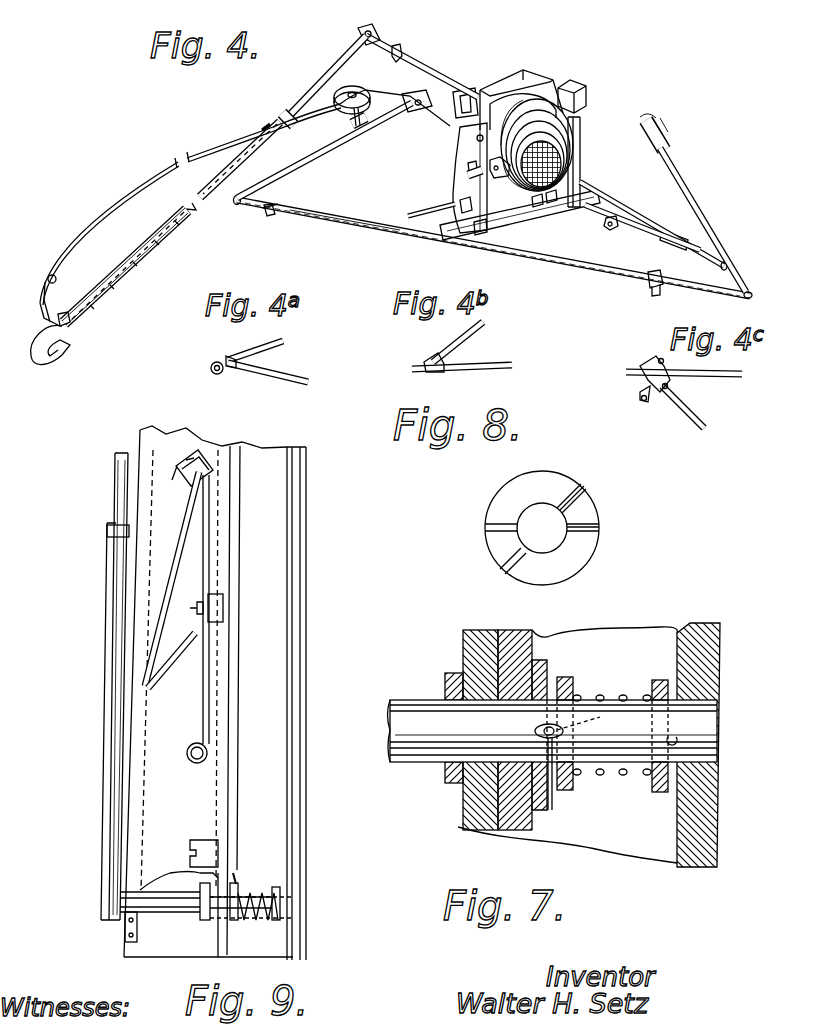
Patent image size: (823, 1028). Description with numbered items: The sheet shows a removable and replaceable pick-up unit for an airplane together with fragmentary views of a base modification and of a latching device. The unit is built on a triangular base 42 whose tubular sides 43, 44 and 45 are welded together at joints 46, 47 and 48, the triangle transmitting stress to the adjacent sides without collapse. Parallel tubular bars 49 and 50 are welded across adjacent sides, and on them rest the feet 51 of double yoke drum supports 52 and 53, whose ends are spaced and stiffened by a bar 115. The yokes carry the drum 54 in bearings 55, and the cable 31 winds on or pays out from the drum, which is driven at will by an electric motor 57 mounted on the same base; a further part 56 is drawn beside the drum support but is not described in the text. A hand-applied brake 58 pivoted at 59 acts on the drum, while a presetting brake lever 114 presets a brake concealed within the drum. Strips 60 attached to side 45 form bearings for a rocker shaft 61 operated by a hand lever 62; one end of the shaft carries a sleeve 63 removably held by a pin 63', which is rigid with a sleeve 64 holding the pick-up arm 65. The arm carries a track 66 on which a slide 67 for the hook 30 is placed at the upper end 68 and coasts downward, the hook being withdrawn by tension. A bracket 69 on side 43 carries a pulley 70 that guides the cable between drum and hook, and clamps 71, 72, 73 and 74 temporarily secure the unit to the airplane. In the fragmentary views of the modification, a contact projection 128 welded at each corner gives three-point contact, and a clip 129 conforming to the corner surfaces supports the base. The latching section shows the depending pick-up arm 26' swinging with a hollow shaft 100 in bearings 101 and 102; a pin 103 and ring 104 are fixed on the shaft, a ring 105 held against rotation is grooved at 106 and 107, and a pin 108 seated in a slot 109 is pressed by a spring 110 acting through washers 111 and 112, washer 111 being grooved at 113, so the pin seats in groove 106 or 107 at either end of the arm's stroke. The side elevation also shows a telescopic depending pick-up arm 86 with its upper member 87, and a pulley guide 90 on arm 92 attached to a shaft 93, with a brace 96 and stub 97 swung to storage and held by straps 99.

In FIG. 4, the hook 30 is at (47, 358).
In FIG. 4, the cable 31 is at (122, 189).
In FIG. 4, the triangular base 42 is at (395, 230).
In FIG. 4, the side 43 is at (330, 147).
In FIG. 4A, the side 43 is at (258, 350).
In FIG. 4B, the side 43 is at (498, 362).
In FIG. 4C, the side 43 is at (738, 380).
In FIG. 4, the side 44 is at (320, 214).
In FIG. 4A, the side 44 is at (286, 376).
In FIG. 4B, the side 44 is at (484, 322).
In FIG. 4C, the side 44 is at (680, 410).
In FIG. 4, the side 45 is at (603, 208).
In FIG. 4, the welded joint 46 is at (241, 205).
In FIG. 4A, the welded joint 46 is at (222, 360).
In FIG. 4, the welded joint 47 is at (448, 82).
In FIG. 4, the welded joint 48 is at (752, 292).
In FIG. 4, the parallel bar 49 is at (420, 213).
In FIG. 4, the parallel bar 50 is at (522, 215).
In FIG. 4, the feet 51 is at (468, 219).
In FIG. 4, the double yoke drum support 52 is at (476, 143).
In FIG. 4, the double yoke drum support 53 is at (568, 80).
In FIG. 4, the drum 54 is at (572, 118).
In FIG. 4, the bearings 55 is at (492, 180).
In FIG. 4, the crank stub 56 is at (468, 177).
In FIG. 4, the electric motor 57 is at (582, 122).
In FIG. 4, the brake 58 is at (537, 210).
In FIG. 4, the brake pivot 59 is at (560, 210).
In FIG. 4, the strips 60 is at (458, 112).
In FIG. 4, the rocker shaft 61 is at (632, 216).
In FIG. 4, the hand lever 62 is at (690, 188).
In FIG. 4, the sleeve 63 is at (384, 32).
In FIG. 4, the pin 63' is at (419, 46).
In FIG. 4, the sleeve 64 is at (340, 68).
In FIG. 4, the pick-up arm 65 is at (284, 118).
In FIG. 4, the track 66 is at (100, 295).
In FIG. 4, the slide 67 is at (68, 326).
In FIG. 4, the upper end of track 68 is at (266, 132).
In FIG. 4, the bracket 69 is at (368, 128).
In FIG. 4, the pulley 70 is at (362, 84).
In FIG. 4, the clamp 71 is at (270, 216).
In FIG. 4, the clamp 72 is at (406, 98).
In FIG. 4, the clamp 73 is at (612, 228).
In FIG. 4, the clamp 74 is at (656, 290).
In FIG. 4, the presetting brake lever 114 is at (468, 166).
In FIG. 4, the bar 115 is at (508, 74).
In FIG. 4A, the contact projection 128 is at (235, 372).
In FIG. 4B, the contact projection 128 is at (428, 358).
In FIG. 4C, the clip 129 is at (646, 366).
In FIG. 8, the ring 105 is at (516, 488).
In FIG. 7, the ring 105 is at (560, 665).
In FIG. 8, the groove 106 is at (596, 526).
In FIG. 8, the groove 107 is at (584, 496).
In FIG. 7, the hollow shaft 100 is at (413, 733).
In FIG. 9, the hollow shaft 100 is at (165, 905).
In FIG. 7, the bearing 101 is at (712, 710).
In FIG. 9, the bearing 101 is at (290, 912).
In FIG. 7, the bearing 102 is at (500, 700).
In FIG. 9, the bearing 102 is at (224, 883).
In FIG. 7, the pin 103 is at (722, 746).
In FIG. 7, the ring 104 is at (452, 776).
In FIG. 7, the pin 108 is at (536, 729).
In FIG. 9, the pin 108 is at (236, 872).
In FIG. 7, the slot 109 is at (585, 738).
In FIG. 7, the spring 110 is at (617, 778).
In FIG. 9, the spring 110 is at (250, 918).
In FIG. 7, the washer 111 is at (570, 676).
In FIG. 9, the washer 111 is at (236, 884).
In FIG. 7, the washer 112 is at (660, 795).
In FIG. 9, the washer 112 is at (274, 886).
In FIG. 7, the groove 113 is at (594, 719).
In FIG. 9, the depending pick-up arm 26' is at (82, 884).
In FIG. 9, the telescopic depending pick-up arm 86 is at (110, 535).
In FIG. 9, the upper telescopic member 87 is at (110, 757).
In FIG. 9, the pulley guide 90 is at (190, 456).
In FIG. 9, the arm 92 is at (210, 542).
In FIG. 9, the shaft 93 is at (191, 765).
In FIG. 9, the brace 96 is at (188, 512).
In FIG. 9, the stub 97 is at (170, 662).
In FIG. 9, the straps 99 is at (222, 612).